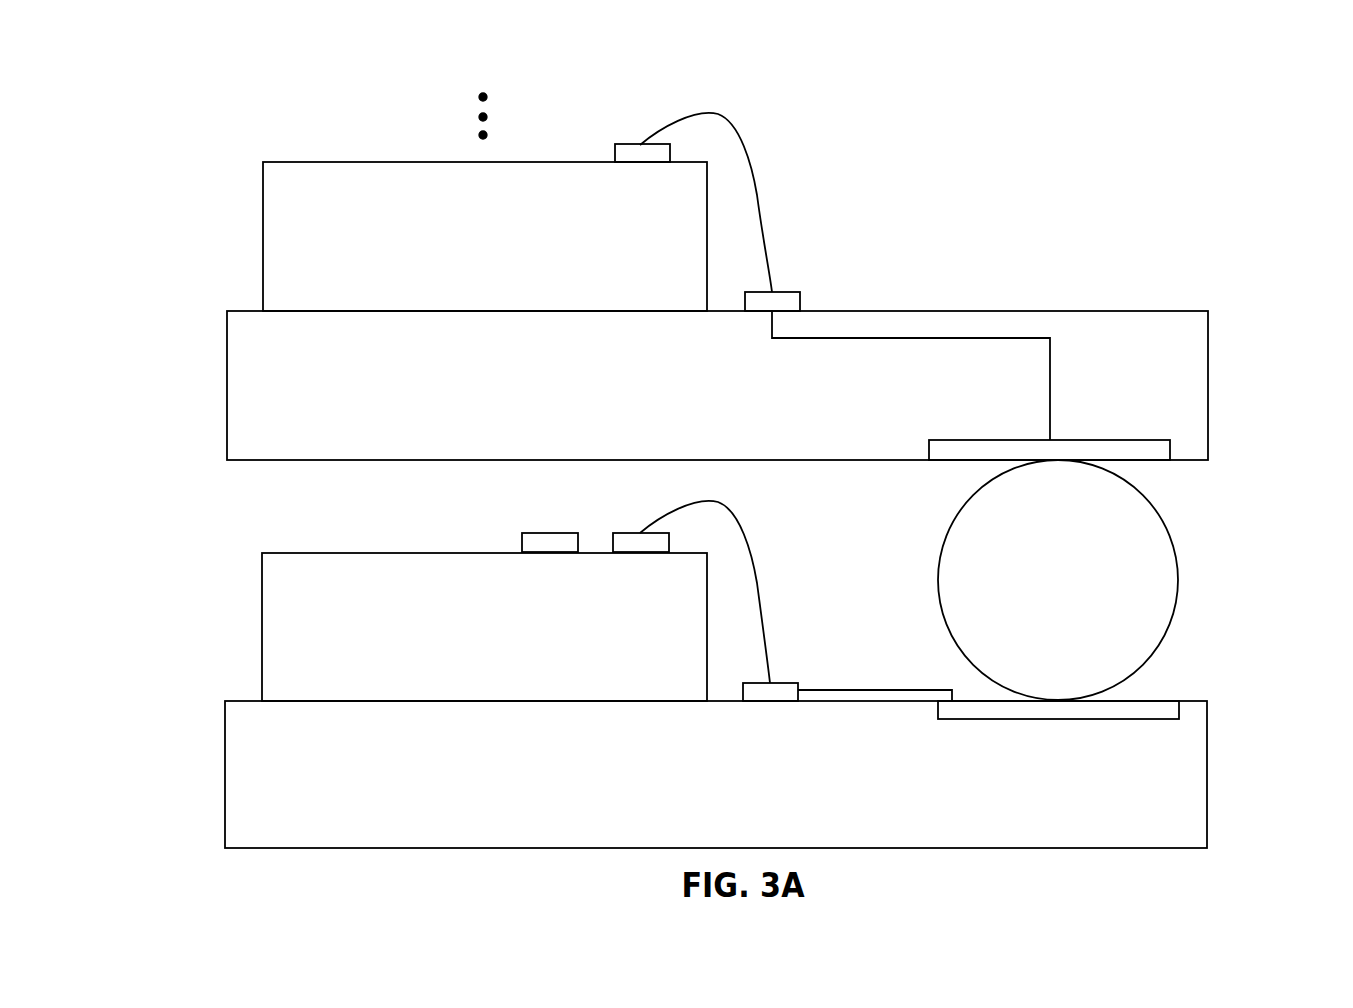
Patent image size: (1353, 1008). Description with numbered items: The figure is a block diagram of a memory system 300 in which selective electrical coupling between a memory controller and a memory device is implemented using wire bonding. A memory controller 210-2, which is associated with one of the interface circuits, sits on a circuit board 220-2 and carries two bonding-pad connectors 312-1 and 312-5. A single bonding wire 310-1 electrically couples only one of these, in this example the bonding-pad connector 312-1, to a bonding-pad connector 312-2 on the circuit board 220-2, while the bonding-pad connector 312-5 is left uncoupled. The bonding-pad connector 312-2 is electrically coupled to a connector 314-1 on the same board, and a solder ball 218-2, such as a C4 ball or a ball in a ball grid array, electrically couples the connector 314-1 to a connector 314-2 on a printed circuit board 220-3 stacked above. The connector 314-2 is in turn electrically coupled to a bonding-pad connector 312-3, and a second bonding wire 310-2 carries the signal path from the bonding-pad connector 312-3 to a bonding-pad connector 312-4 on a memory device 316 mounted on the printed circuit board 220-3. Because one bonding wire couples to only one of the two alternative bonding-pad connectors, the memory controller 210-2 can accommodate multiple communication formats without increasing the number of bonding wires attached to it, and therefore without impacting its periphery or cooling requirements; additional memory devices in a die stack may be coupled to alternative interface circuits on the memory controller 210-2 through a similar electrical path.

The memory system 300 is at (1060, 138).
The memory device 316 is at (485, 236).
The bonding-pad connector 312-4 is at (642, 152).
The bonding wire 310-2 is at (758, 197).
The bonding-pad connector 312-3 is at (770, 302).
The printed circuit board 220-3 is at (717, 385).
The connector 314-2 is at (1048, 453).
The solder ball 218-2 is at (1058, 580).
The memory controller 210-2 is at (484, 627).
The bonding-pad connector 312-5 is at (548, 542).
The bonding-pad connector 312-1 is at (643, 542).
The bonding wire 310-1 is at (758, 580).
The bonding-pad connector 312-2 is at (780, 690).
The circuit board 220-2 is at (716, 769).
The connector 314-1 is at (1050, 708).